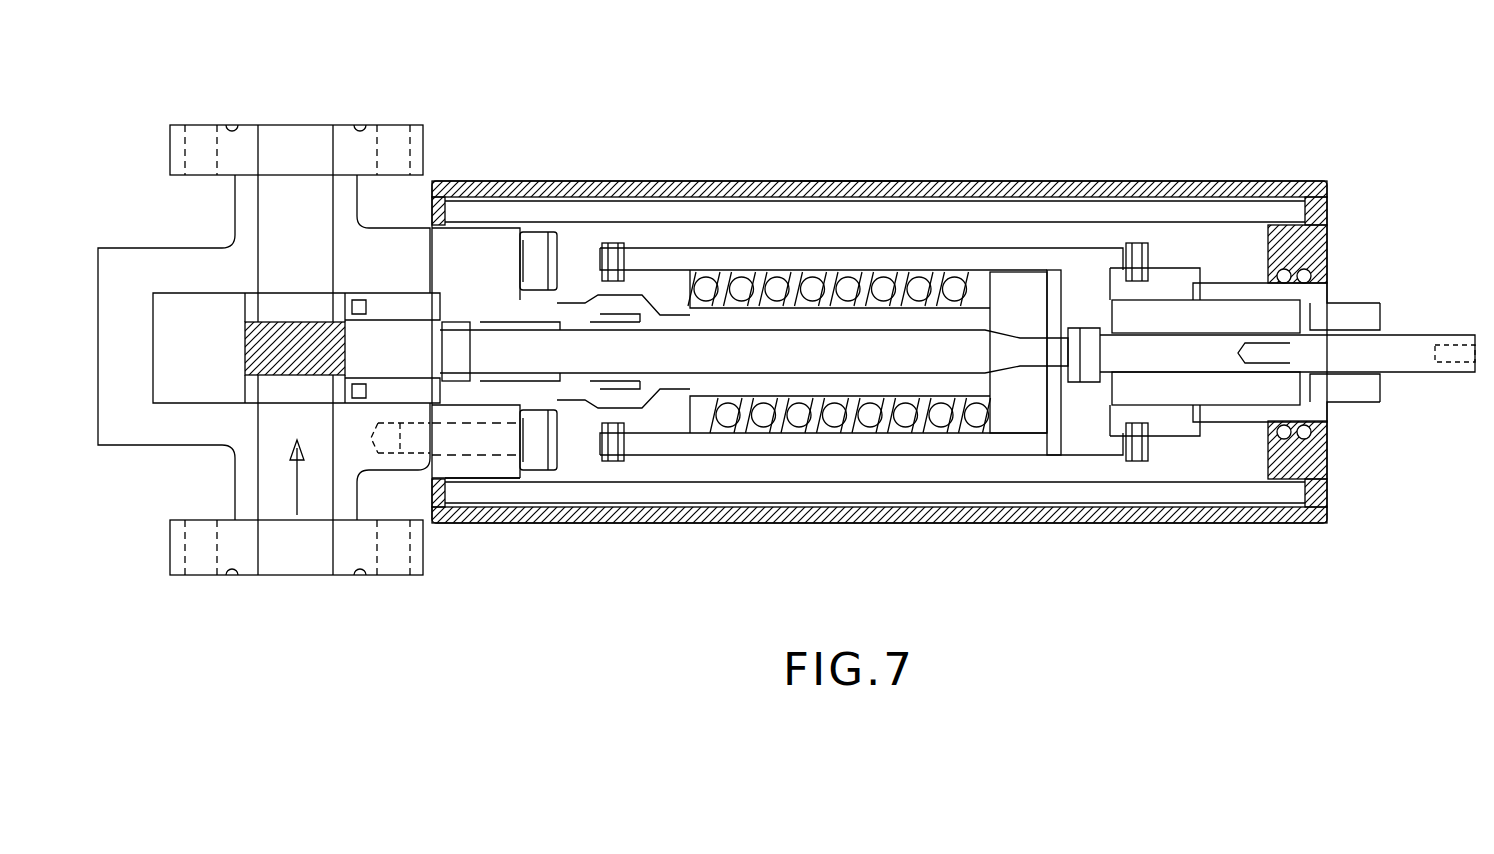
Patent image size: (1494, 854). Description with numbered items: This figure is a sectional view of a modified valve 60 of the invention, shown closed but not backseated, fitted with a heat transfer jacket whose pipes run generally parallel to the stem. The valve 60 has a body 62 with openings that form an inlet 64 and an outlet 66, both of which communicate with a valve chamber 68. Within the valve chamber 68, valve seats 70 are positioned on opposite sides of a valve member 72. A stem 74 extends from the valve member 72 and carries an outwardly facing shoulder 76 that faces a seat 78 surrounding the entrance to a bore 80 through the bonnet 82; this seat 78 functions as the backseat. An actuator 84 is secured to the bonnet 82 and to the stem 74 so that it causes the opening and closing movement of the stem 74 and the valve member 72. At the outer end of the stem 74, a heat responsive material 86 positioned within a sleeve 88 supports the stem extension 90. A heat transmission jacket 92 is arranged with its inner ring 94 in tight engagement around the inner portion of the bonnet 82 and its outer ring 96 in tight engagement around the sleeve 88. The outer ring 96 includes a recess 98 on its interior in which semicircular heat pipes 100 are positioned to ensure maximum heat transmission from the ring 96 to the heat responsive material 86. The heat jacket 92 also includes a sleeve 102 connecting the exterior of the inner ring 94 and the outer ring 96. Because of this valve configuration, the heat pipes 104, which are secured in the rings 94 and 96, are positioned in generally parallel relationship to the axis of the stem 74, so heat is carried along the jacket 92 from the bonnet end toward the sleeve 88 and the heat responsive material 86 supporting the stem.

The valve 60 is at (632, 138).
The body 62 is at (235, 212).
The inlet 64 is at (270, 575).
The outlet 66 is at (262, 125).
The valve chamber 68 is at (196, 336).
The valve seats 70 is at (245, 326).
The valve member 72 is at (286, 320).
The stem 74 is at (768, 330).
The outwardly facing shoulder 76 is at (512, 380).
The seat 78 is at (506, 374).
The bore 80 is at (530, 330).
The bonnet 82 is at (512, 474).
The actuator 84 is at (1000, 252).
The heat responsive material 86 is at (1352, 320).
The sleeve 88 is at (1330, 292).
The stem extension 90 is at (1292, 330).
The heat transmission jacket 92 is at (1133, 181).
The inner ring 94 is at (432, 206).
The outer ring 96 is at (1268, 240).
The recess 98 is at (1276, 282).
The semicircular heat pipes 100 is at (1300, 440).
The sleeve 102 is at (822, 181).
The heat pipes 104 is at (904, 197).